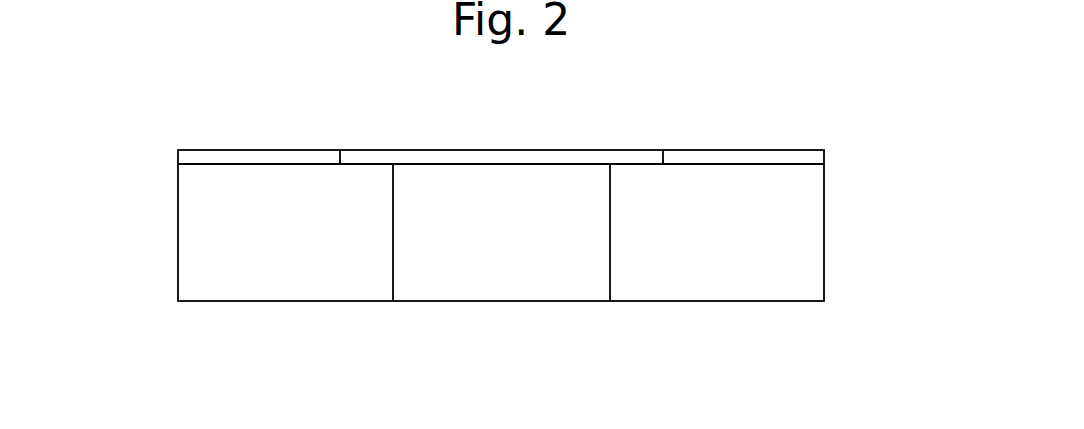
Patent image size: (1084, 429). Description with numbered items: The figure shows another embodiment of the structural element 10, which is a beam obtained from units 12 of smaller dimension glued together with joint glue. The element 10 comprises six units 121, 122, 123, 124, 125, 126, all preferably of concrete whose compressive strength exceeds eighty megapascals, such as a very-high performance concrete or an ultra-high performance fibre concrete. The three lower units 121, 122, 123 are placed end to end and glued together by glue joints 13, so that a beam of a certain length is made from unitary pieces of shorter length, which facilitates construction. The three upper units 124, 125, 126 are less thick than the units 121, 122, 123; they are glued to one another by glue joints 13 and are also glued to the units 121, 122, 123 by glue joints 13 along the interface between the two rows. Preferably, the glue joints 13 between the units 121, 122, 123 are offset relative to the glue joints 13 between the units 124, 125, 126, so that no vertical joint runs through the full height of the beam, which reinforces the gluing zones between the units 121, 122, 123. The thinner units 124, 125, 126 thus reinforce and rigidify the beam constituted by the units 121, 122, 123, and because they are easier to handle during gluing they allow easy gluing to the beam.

The structural element 10 is at (864, 231).
The unit 12 is at (847, 76).
The glue joint 13 is at (272, 166).
The unit 121 is at (258, 268).
The unit 122 is at (493, 258).
The unit 123 is at (703, 256).
The unit 124 is at (260, 159).
The unit 125 is at (480, 157).
The unit 126 is at (768, 159).